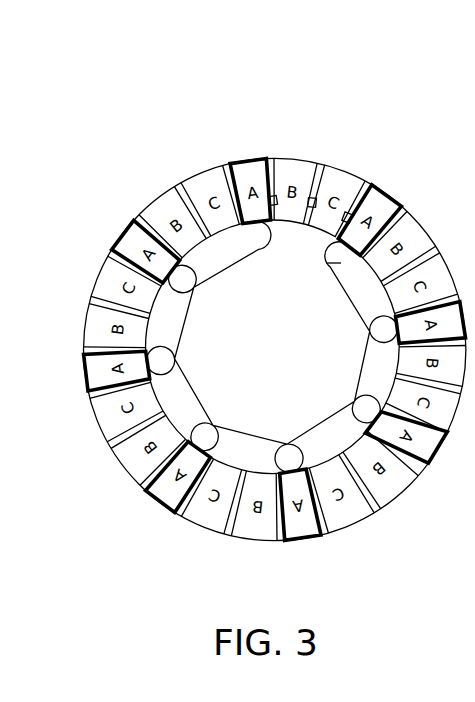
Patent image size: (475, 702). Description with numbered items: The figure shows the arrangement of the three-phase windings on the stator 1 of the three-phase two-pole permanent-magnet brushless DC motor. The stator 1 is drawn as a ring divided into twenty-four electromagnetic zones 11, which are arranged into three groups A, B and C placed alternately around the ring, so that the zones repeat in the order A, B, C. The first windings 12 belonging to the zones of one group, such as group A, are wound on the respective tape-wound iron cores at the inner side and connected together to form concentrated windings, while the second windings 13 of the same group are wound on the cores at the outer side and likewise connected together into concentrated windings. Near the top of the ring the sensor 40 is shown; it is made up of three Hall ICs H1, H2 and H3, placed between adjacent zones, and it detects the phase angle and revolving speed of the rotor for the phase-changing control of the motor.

The stator 1 is at (241, 304).
The electromagnetic zone 11 is at (249, 243).
The first winding 12 is at (243, 159).
The second winding 13 is at (241, 306).
The sensor 40 is at (347, 145).
The Hall IC H1 is at (273, 196).
The Hall IC H2 is at (312, 200).
The Hall IC H3 is at (347, 213).